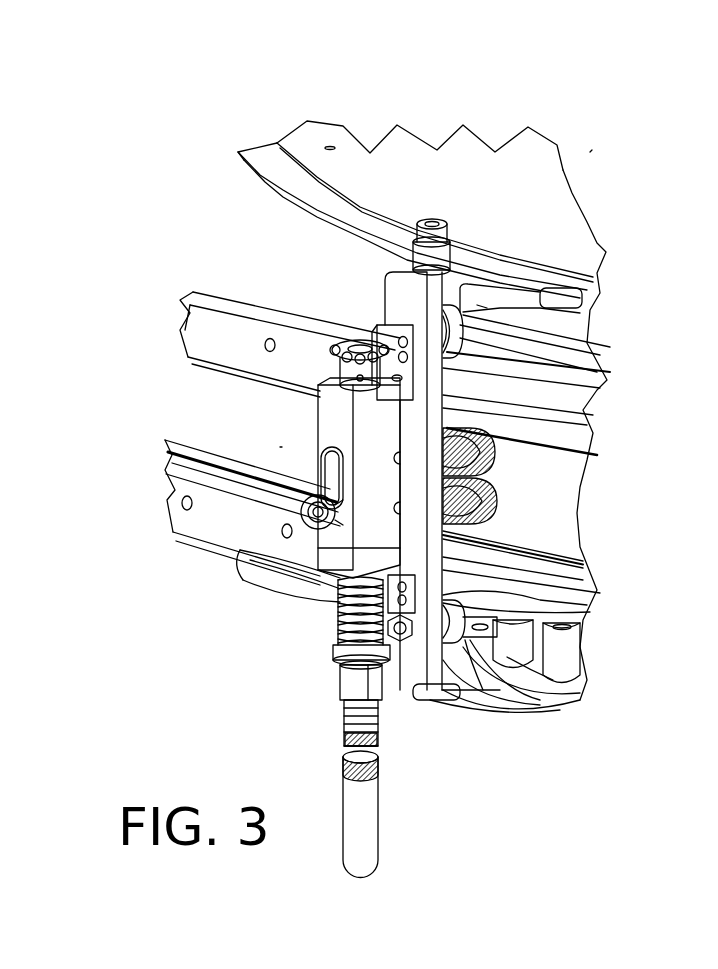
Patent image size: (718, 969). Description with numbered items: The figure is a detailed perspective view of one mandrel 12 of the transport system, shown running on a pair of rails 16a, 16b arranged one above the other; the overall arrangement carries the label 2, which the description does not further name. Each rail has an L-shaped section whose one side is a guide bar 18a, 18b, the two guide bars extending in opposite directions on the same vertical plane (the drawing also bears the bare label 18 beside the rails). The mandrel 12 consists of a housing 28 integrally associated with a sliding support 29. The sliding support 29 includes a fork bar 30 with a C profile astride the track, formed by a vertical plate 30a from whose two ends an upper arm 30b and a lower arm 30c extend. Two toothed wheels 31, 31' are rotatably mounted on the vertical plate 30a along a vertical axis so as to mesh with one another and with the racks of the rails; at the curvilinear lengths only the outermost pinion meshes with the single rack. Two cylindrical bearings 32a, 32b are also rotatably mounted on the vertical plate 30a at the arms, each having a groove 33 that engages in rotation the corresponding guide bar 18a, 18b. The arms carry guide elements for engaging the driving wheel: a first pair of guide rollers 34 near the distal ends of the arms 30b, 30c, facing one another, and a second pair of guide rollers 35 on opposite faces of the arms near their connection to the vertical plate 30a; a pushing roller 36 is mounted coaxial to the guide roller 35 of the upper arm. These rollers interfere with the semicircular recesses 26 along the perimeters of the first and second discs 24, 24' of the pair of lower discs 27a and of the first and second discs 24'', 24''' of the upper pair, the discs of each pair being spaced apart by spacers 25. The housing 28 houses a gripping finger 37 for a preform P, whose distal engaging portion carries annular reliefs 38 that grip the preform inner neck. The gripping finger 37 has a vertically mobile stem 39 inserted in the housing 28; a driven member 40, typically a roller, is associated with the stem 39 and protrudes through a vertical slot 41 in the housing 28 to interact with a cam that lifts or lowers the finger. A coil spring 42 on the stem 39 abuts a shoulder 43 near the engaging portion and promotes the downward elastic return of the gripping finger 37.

The mounting assembly 2 is at (598, 146).
The mandrel 12 is at (272, 445).
The rail 16a is at (158, 524).
The rail 16b is at (213, 288).
The rail mount 18 is at (705, 510).
The guide bar 18a is at (307, 497).
The guide bar 18b is at (303, 317).
The first disc 24 is at (537, 455).
The second disc 24' is at (552, 677).
The first disc 24'' is at (584, 300).
The second disc 24''' is at (376, 209).
The spacers 25 is at (585, 293).
The semicircular recesses 26 is at (460, 295).
The pair of lower discs 27a is at (600, 630).
The housing 28 is at (327, 433).
The sliding support 29 is at (362, 272).
The fork bar 30 is at (457, 690).
The vertical plate 30a is at (593, 413).
The arm 30b is at (480, 285).
The arm 30c is at (547, 673).
The toothed wheel 31 is at (546, 460).
The toothed wheel 31' is at (549, 505).
The cylindrical bearing 32a is at (570, 605).
The cylindrical bearing 32b is at (600, 372).
The groove 33 is at (477, 318).
The first pair of guide rollers 34 is at (557, 315).
The second pair of guide rollers 35 is at (413, 268).
The pushing roller 36 is at (447, 247).
The gripping finger 37 is at (350, 688).
The annular reliefs 38 is at (383, 722).
The stem 39 is at (340, 620).
The driven member 40 is at (242, 556).
The slot 41 is at (323, 465).
The coil spring 42 is at (338, 640).
The shoulder 43 is at (343, 656).
The preform P is at (372, 823).